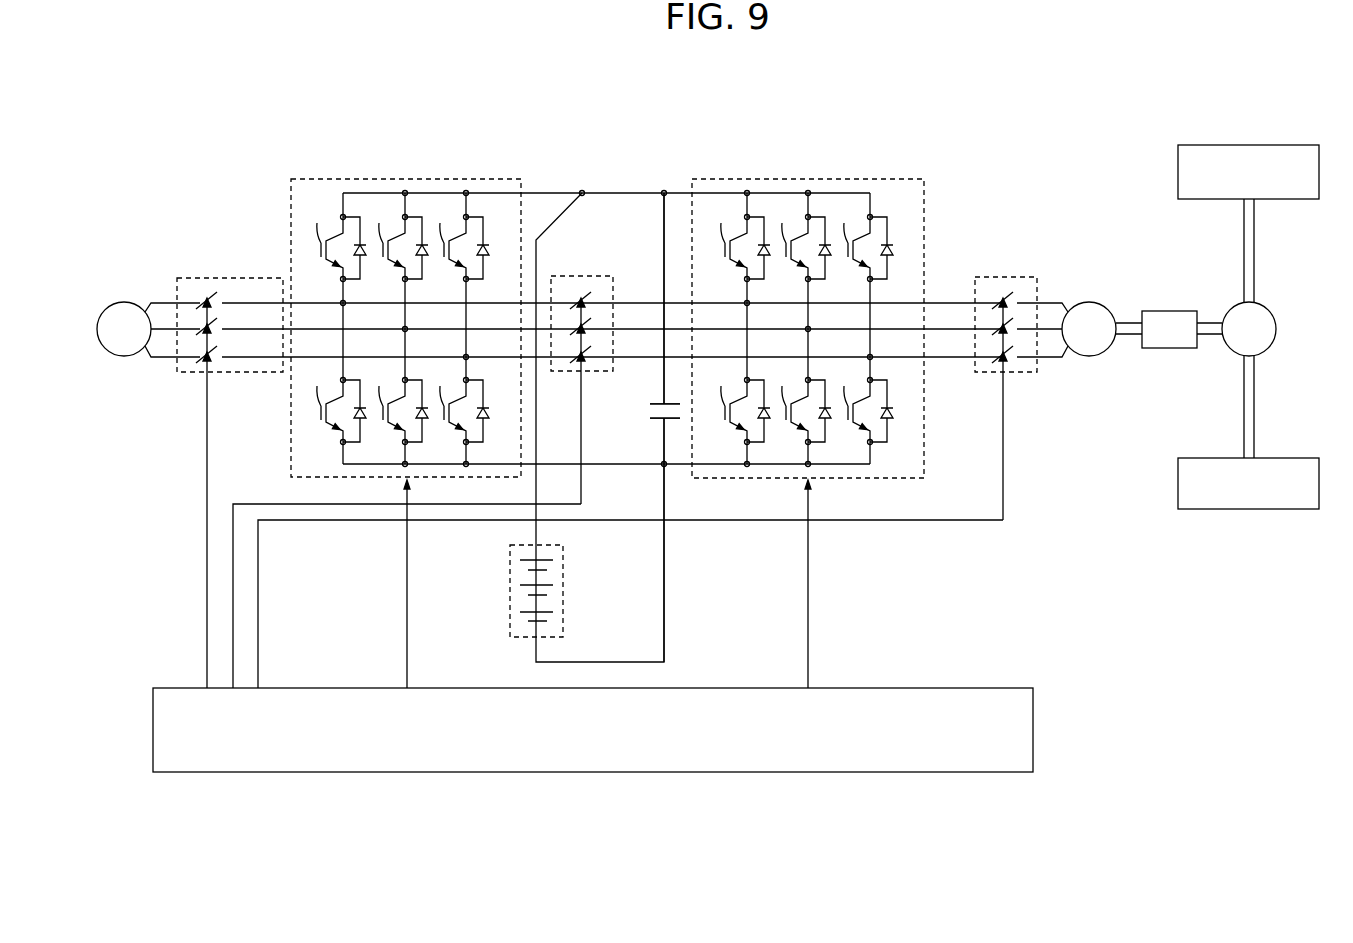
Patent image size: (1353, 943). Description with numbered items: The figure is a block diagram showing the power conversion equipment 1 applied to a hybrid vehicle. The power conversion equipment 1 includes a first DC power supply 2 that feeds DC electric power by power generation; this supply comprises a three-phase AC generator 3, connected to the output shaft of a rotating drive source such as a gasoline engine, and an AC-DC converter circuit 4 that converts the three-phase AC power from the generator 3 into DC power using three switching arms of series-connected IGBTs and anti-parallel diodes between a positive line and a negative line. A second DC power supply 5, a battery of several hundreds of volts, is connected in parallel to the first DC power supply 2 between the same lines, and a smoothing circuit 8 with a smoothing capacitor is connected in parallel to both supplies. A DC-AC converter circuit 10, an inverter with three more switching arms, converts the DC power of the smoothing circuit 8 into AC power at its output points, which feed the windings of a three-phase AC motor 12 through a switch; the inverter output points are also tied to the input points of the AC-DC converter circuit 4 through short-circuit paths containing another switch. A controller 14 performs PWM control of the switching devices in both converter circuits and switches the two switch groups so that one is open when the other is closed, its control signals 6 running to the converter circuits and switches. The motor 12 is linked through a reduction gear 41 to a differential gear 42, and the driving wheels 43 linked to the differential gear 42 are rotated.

The power conversion equipment 1 is at (772, 124).
The first DC power supply 2 is at (271, 203).
The three-phase AC generator 3 is at (122, 304).
The AC-DC converter circuit 4 is at (359, 178).
The second DC power supply 5 is at (563, 590).
The control signal line 6 is at (398, 609).
The smoothing circuit 8 is at (655, 434).
The DC-AC converter circuit 10 is at (882, 178).
The three-phase AC motor 12 is at (1088, 304).
The controller 14 is at (1034, 728).
The reduction gear 41 is at (1170, 311).
The differential gear 42 is at (1268, 311).
The driving wheels 43 is at (1276, 146).